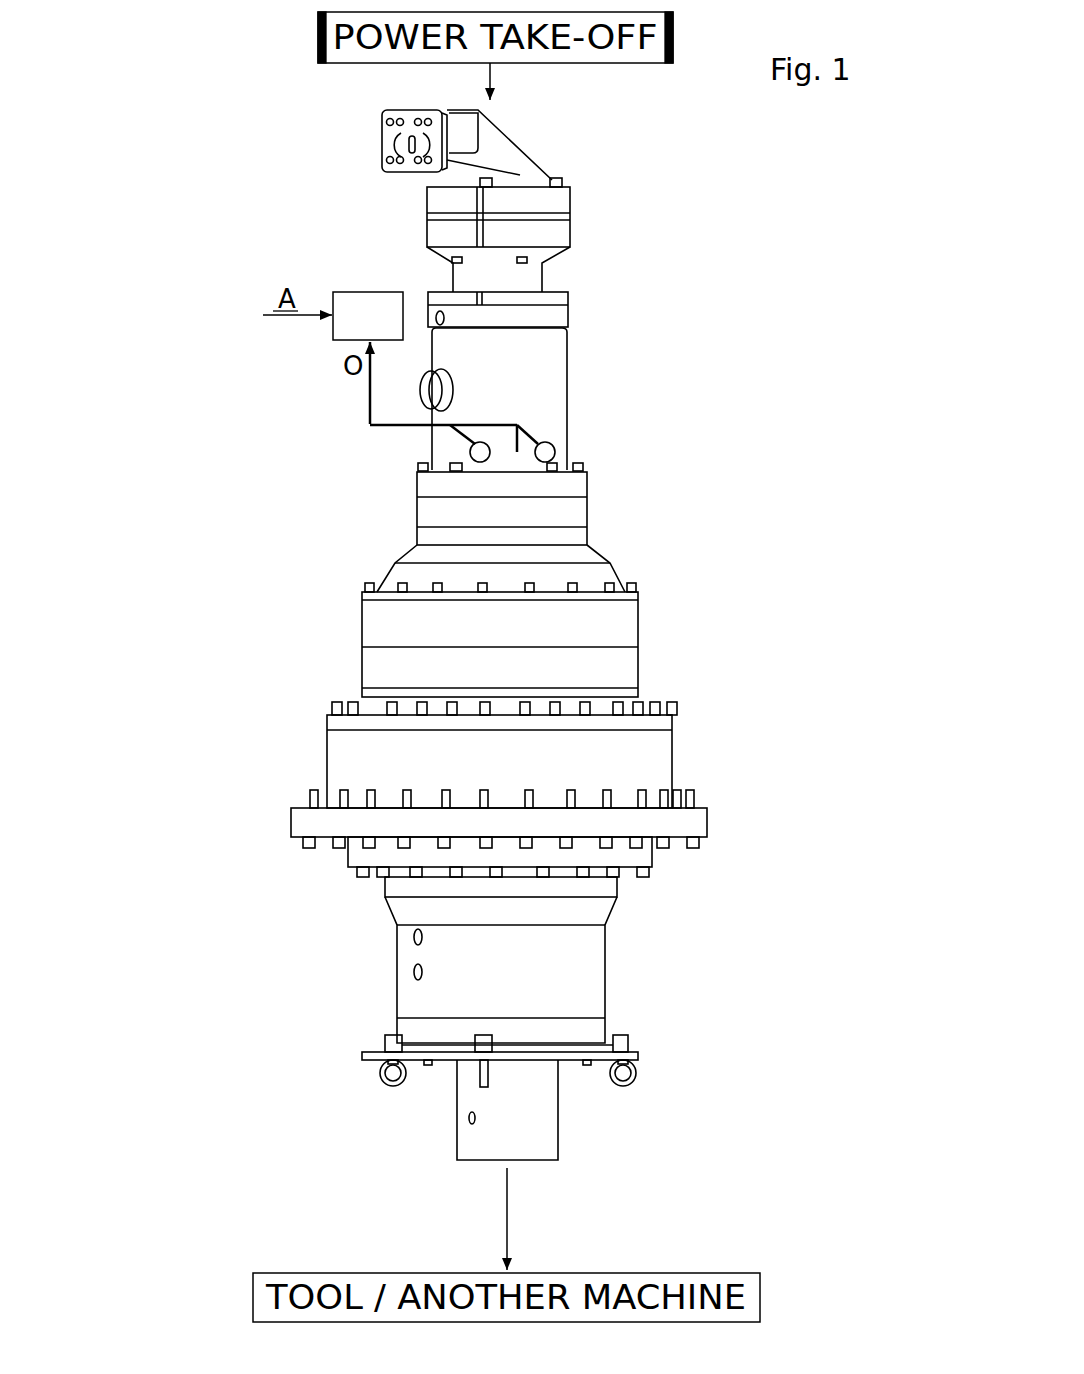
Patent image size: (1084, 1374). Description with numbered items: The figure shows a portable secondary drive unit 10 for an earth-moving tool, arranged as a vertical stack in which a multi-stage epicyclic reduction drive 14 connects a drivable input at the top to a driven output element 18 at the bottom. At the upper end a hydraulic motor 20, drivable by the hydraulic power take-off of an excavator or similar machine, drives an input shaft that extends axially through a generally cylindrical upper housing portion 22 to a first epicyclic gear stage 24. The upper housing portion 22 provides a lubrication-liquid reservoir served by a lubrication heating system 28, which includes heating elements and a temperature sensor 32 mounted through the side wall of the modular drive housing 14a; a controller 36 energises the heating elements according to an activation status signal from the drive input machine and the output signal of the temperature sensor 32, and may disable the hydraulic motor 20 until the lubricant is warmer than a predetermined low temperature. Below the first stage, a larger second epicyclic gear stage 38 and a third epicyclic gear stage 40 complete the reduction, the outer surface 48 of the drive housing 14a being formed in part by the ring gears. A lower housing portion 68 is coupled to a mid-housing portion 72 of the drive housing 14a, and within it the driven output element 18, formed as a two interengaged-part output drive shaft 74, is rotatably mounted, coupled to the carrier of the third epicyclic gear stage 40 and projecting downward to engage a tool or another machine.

The portable secondary drive unit 10 is at (690, 369).
The multi-stage epicyclic reduction drive 14 is at (682, 720).
The drive housing 14a is at (657, 853).
The driven output element 18 is at (549, 1110).
The hydraulic motor 20 is at (448, 187).
The upper housing portion 22 is at (564, 375).
The first epicyclic gear stage 24 is at (435, 507).
The lubrication heating system 28 is at (558, 450).
The temperature sensor 32 is at (518, 458).
The controller 36 is at (400, 368).
The second epicyclic gear stage 38 is at (389, 622).
The third epicyclic gear stage 40 is at (371, 760).
The outer surface of the drive housing 48 is at (638, 668).
The lower housing portion 68 is at (574, 943).
The mid-housing portion 72 is at (674, 772).
The output drive shaft 74 is at (489, 1128).